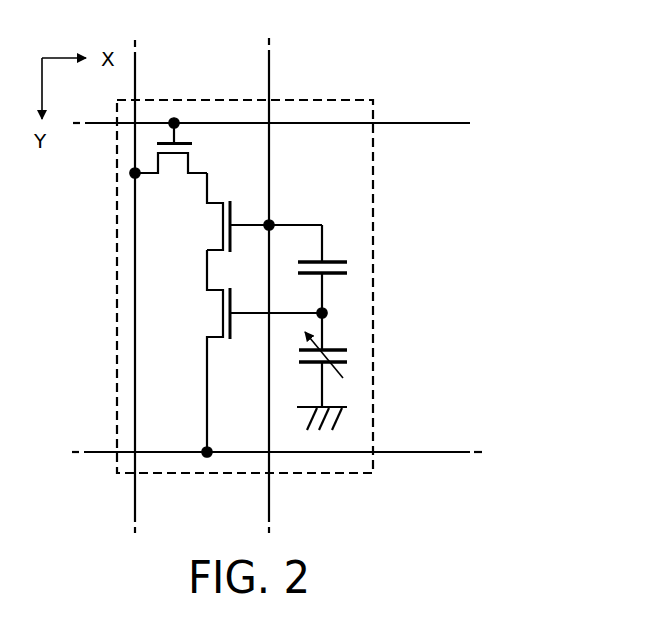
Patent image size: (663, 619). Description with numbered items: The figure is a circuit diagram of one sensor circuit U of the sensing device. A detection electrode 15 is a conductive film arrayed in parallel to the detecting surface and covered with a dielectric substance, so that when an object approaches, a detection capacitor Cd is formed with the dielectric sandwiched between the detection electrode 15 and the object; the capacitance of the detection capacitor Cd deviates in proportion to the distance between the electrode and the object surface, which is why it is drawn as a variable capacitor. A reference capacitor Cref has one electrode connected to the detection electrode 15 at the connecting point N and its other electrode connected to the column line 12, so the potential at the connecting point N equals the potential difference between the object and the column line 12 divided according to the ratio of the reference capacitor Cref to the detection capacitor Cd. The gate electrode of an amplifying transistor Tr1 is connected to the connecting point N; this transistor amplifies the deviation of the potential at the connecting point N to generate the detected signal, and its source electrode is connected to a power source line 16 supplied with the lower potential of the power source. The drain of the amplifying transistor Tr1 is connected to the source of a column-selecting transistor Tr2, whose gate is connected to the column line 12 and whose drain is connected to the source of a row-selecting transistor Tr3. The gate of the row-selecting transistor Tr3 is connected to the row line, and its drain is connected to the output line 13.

The column line 12 is at (270, 80).
The output line 13 is at (136, 80).
The detection electrode 15 is at (338, 347).
The power source line 16 is at (430, 453).
The sensor circuit U is at (375, 184).
The amplifying transistor Tr1 is at (205, 312).
The column-selecting transistor Tr2 is at (205, 223).
The row-selecting transistor Tr3 is at (189, 158).
The reference capacitor Cref is at (347, 268).
The detection capacitor Cd is at (346, 361).
The connecting point N is at (327, 312).